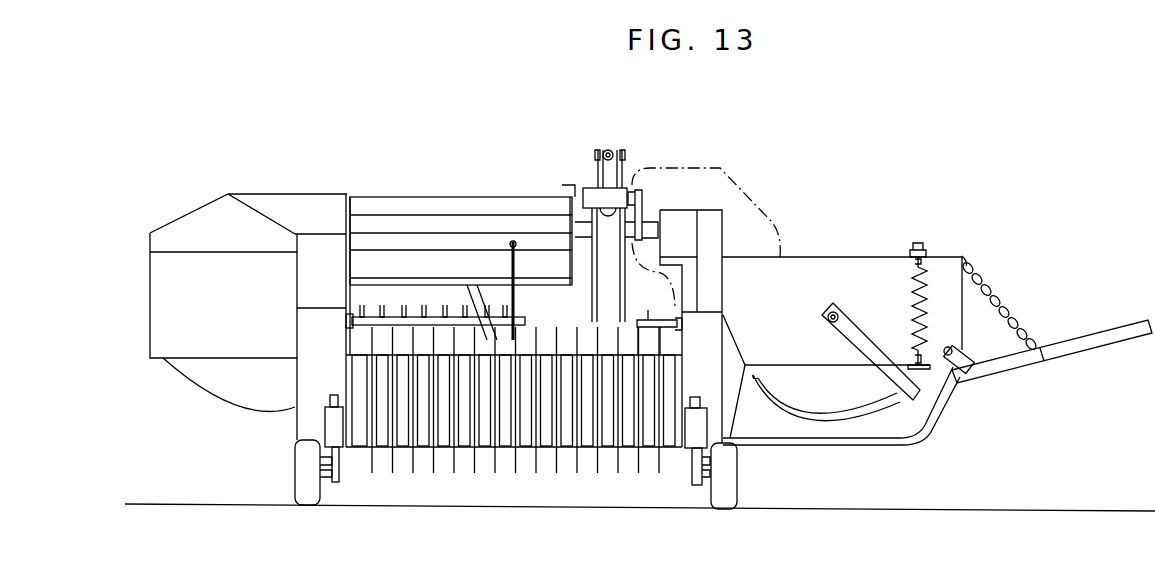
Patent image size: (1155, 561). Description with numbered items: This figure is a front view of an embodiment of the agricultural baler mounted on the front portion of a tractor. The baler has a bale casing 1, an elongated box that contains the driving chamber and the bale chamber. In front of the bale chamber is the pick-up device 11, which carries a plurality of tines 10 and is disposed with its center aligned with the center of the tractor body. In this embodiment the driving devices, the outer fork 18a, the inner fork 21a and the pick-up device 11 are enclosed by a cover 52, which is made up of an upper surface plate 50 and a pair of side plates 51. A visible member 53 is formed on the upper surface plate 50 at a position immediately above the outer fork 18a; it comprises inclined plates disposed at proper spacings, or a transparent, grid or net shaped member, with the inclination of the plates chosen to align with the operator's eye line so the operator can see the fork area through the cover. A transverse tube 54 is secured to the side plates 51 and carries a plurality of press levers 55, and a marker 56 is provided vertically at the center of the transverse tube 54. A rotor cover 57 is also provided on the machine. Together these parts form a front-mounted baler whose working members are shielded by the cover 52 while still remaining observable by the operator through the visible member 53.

The bale casing 1 is at (820, 270).
The tines 10 is at (533, 463).
The pick-up device 11 is at (453, 491).
The outer fork 18a is at (480, 300).
The inner fork 21a is at (625, 248).
The upper surface plate 50 is at (303, 208).
The side plates 51 is at (308, 432).
The cover 52 is at (212, 217).
The visible member 53 is at (397, 202).
The transverse tube 54 is at (430, 322).
The press levers 55 is at (382, 313).
The marker 56 is at (515, 273).
The rotor cover 57 is at (503, 442).